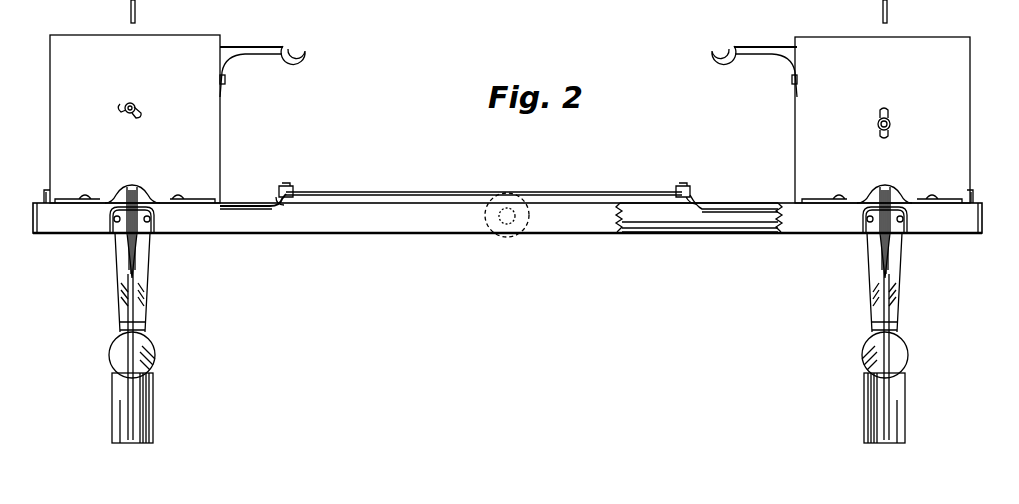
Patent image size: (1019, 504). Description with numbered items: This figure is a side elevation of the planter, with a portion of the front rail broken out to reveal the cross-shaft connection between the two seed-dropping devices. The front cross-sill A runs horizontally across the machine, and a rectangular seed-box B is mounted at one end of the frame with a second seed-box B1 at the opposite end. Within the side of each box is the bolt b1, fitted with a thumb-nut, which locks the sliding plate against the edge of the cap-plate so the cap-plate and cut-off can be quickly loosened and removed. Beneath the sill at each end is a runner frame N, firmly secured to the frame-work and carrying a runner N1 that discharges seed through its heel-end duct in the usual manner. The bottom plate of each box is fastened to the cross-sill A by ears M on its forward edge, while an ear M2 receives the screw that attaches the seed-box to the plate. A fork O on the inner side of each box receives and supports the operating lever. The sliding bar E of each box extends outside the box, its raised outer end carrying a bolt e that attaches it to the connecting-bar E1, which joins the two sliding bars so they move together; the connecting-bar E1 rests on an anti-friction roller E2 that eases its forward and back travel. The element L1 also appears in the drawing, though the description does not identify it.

The front cross-sill A is at (507, 218).
The seed-box B is at (882, 120).
The seed-box B1 is at (135, 119).
The bolt b1 is at (137, 108).
The runner frame N is at (903, 266).
The runner N1 is at (922, 330).
The ears M is at (508, 205).
The ear M2 is at (505, 190).
The fork O is at (508, 57).
The sliding bar E is at (499, 197).
The connecting-bar E1 is at (484, 183).
The anti-friction roller E2 is at (507, 225).
The bolt e is at (486, 186).
The rack L1 is at (687, 237).